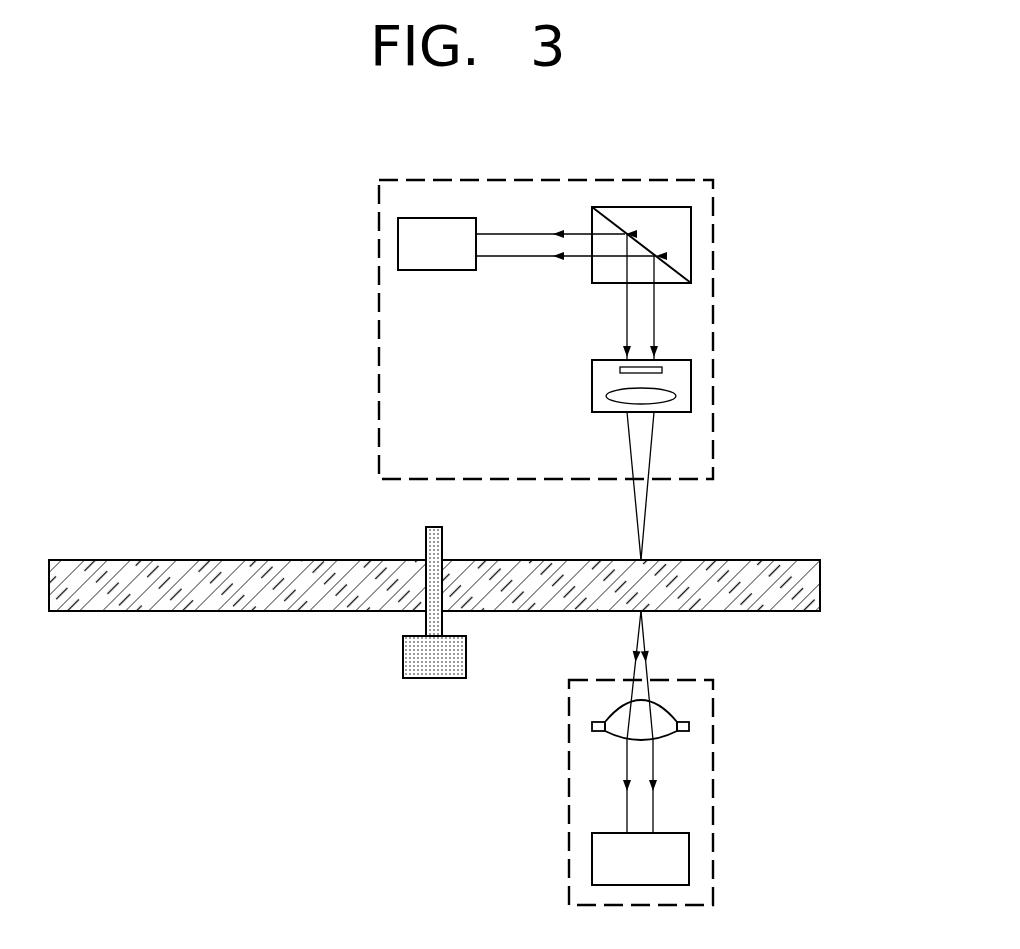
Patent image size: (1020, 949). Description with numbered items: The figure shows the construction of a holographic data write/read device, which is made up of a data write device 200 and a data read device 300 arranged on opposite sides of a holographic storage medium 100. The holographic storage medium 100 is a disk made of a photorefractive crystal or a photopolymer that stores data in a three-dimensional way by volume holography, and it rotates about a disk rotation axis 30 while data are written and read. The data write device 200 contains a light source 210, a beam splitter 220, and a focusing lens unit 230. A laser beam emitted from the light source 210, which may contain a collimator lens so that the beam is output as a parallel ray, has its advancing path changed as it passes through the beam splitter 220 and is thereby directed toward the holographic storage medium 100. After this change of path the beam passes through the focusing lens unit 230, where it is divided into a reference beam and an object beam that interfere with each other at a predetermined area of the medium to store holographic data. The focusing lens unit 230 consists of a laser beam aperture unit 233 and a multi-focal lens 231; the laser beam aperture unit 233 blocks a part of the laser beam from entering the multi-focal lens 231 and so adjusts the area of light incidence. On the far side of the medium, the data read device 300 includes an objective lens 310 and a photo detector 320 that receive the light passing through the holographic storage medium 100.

The disk rotation axis 30 is at (438, 679).
The holographic storage medium 100 is at (820, 583).
The data write device 200 is at (713, 308).
The light source 210 is at (398, 242).
The beam splitter 220 is at (691, 235).
The focusing lens unit 230 is at (691, 380).
The multi-focal lens 231 is at (606, 398).
The laser beam aperture unit 233 is at (605, 366).
The data read device 300 is at (713, 795).
The objective lens 310 is at (689, 726).
The photo detector 320 is at (689, 862).